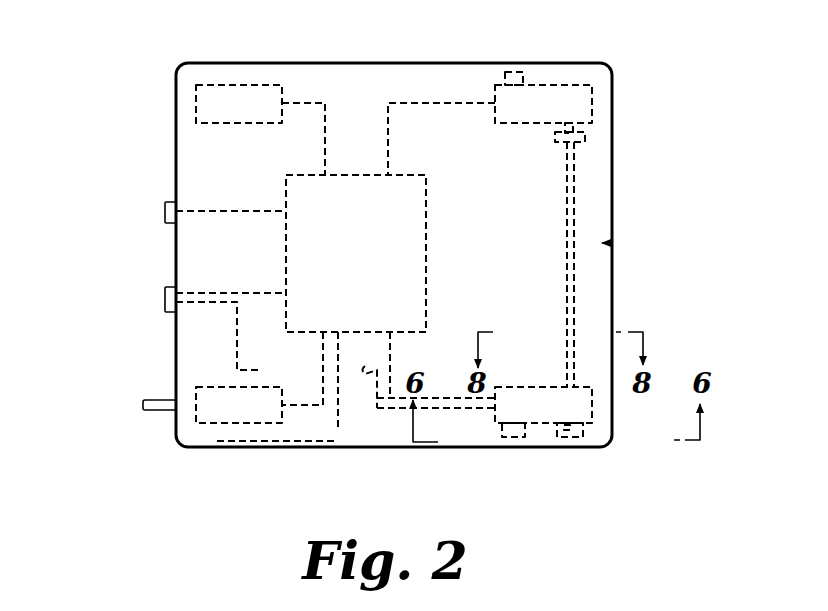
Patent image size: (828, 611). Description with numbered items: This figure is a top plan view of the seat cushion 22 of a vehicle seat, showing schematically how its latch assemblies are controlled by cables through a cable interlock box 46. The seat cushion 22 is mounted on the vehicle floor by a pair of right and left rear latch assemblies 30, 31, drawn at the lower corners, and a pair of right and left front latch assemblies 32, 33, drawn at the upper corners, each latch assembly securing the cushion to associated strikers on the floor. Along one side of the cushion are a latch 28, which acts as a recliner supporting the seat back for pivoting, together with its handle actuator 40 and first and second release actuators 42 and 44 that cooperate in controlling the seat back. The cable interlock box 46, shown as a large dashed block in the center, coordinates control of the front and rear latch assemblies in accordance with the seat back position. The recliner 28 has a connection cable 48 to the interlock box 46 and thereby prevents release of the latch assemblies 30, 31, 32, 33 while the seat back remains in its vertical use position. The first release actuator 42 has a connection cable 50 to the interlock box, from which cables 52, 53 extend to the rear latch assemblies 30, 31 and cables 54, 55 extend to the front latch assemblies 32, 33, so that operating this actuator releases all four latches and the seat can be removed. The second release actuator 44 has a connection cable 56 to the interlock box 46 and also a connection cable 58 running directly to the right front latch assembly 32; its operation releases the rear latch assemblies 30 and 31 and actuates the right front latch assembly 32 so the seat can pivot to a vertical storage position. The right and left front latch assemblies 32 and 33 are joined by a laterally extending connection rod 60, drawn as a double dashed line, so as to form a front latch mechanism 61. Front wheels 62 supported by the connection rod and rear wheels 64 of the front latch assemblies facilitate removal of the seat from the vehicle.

The seat cushion 22 is at (347, 62).
The latch 28 is at (218, 445).
The right rear latch assembly 30 is at (190, 410).
The left rear latch assembly 31 is at (196, 103).
The right front latch assembly 32 is at (547, 440).
The left front latch assembly 33 is at (552, 85).
The handle actuator 40 is at (160, 412).
The first release actuator 42 is at (165, 213).
The second release actuator 44 is at (165, 298).
The cable interlock box 46 is at (430, 258).
The connection cable 48 is at (340, 428).
The connection cable 50 is at (225, 208).
The cable 52 is at (320, 366).
The cable 53 is at (335, 122).
The cable 54 is at (457, 398).
The cable 55 is at (446, 100).
The connection cable 56 is at (227, 293).
The connection cable 58 is at (237, 346).
The connection rod 60 is at (573, 176).
The front latch mechanism 61 is at (612, 243).
The front wheels 62 is at (585, 138).
The rear wheels 64 is at (515, 72).